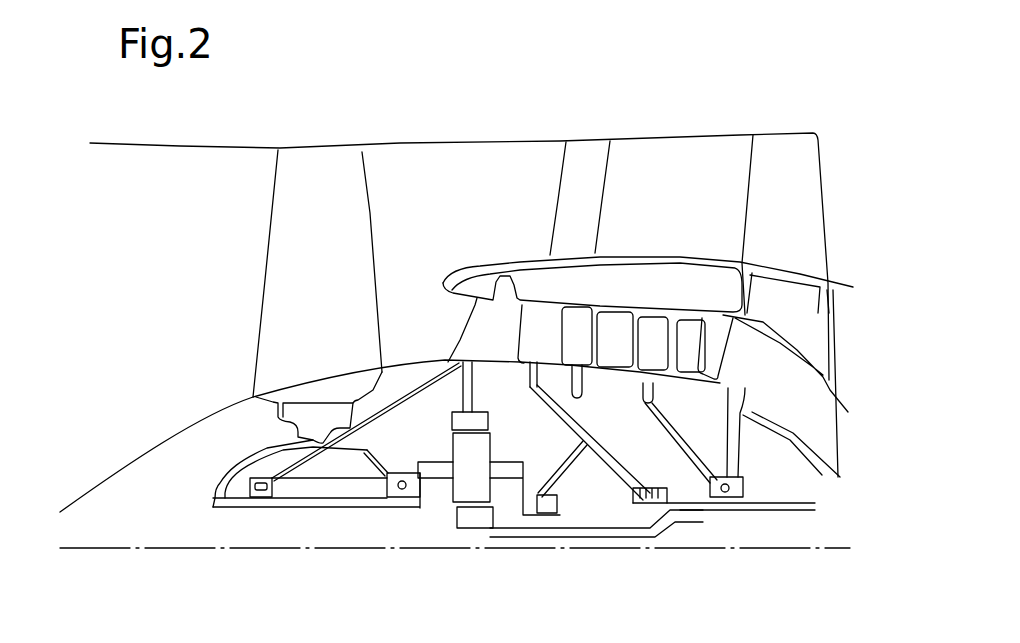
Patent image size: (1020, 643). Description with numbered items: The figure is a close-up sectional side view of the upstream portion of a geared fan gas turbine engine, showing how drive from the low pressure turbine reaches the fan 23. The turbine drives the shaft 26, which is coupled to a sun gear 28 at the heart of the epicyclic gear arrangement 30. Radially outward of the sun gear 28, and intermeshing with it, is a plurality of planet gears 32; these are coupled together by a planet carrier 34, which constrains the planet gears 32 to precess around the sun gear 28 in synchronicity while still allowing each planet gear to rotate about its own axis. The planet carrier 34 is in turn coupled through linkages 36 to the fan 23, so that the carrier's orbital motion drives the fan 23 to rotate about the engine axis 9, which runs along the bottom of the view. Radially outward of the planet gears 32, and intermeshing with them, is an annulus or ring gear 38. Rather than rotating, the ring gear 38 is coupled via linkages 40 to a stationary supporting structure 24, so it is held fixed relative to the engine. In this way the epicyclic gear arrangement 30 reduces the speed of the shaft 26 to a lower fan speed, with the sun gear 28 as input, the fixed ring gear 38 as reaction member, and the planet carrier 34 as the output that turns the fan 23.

The engine axis 9 is at (225, 548).
The fan 23 is at (288, 313).
The stationary supporting structure 24 is at (480, 325).
The shaft 26 is at (705, 510).
The sun gear 28 is at (467, 528).
The epicyclic gear arrangement 30 is at (418, 503).
The planet gears 32 is at (460, 490).
The planet carrier 34 is at (512, 500).
The linkages 36 is at (428, 490).
The ring gear 38 is at (455, 430).
The linkages 40 is at (475, 388).